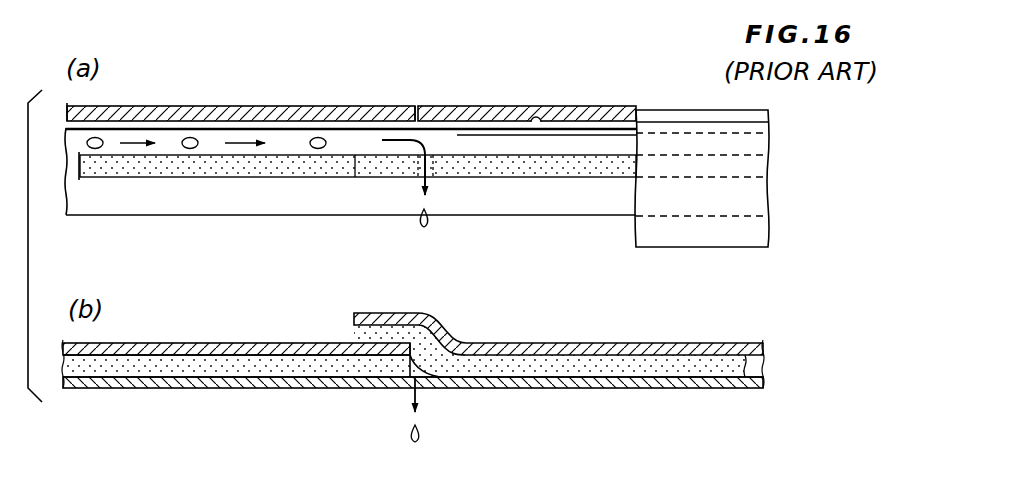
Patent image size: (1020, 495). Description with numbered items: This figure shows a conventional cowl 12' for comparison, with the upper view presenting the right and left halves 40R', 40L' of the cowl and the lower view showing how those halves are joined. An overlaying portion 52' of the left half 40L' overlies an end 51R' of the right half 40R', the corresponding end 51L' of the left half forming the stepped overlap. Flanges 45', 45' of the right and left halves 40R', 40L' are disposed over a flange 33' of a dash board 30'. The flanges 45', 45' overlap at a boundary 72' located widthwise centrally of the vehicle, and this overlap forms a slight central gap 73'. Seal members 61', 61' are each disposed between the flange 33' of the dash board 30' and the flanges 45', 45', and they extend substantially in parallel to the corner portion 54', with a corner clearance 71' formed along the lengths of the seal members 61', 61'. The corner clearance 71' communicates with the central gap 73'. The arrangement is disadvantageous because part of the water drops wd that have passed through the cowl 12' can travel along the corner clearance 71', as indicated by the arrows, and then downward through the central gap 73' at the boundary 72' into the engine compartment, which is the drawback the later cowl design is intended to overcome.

The cowl 12' is at (424, 203).
The dash board 30' is at (413, 413).
The flange 33' is at (160, 335).
The right half 40R' is at (241, 188).
The left half 40L' is at (540, 188).
The flange 45' is at (447, 243).
The end 51R' is at (253, 206).
The end 51L' is at (505, 189).
The overlaying portion 52' is at (558, 308).
The corner portion 54' is at (559, 78).
The seal member 61' is at (369, 311).
The corner clearance 71' is at (309, 89).
The boundary 72' is at (406, 253).
The central gap 73' is at (421, 312).
The water drops wd is at (97, 138).